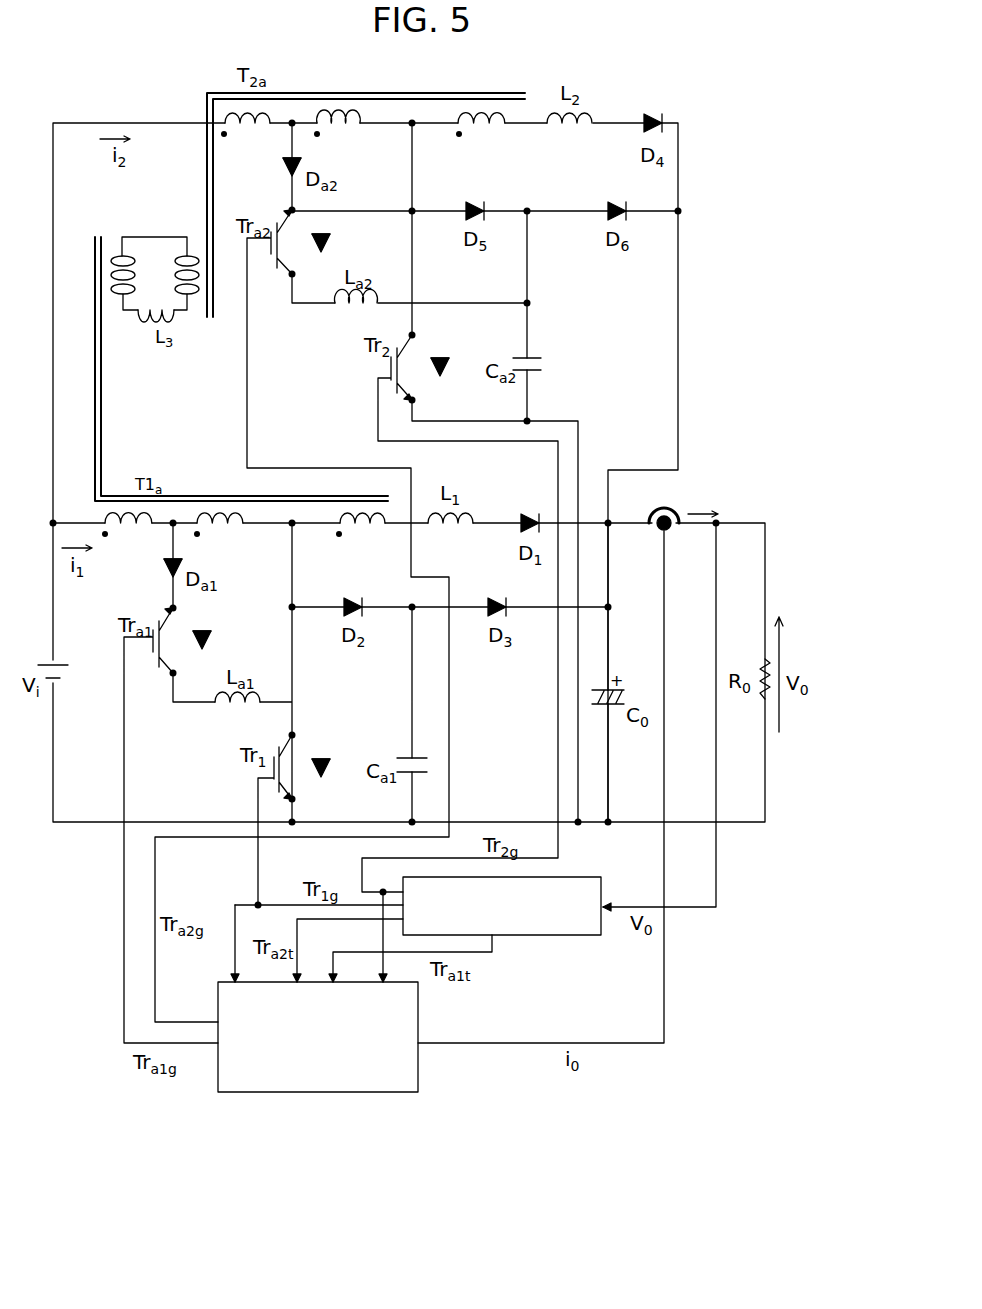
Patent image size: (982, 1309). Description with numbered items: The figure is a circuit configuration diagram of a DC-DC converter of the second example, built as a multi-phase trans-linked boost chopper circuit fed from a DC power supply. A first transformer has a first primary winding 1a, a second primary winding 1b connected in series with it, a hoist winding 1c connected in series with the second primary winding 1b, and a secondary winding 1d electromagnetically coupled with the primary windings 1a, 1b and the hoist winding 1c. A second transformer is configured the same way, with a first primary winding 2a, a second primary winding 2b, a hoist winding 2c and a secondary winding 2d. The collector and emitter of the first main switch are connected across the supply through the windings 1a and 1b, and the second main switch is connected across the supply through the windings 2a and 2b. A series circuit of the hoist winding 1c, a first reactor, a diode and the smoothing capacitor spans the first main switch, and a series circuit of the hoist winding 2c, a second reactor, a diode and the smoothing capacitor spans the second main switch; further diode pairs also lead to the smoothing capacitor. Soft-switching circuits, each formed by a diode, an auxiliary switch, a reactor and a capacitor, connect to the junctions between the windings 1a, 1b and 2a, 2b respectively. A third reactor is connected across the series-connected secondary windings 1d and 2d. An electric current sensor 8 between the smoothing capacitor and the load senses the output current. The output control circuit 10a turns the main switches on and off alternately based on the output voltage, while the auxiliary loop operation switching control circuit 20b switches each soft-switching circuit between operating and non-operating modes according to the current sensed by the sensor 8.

The first primary winding 1a is at (118, 540).
The second primary winding 1b is at (232, 540).
The hoist winding 1c is at (355, 540).
The secondary winding 1d is at (121, 298).
The first primary winding 2a is at (239, 142).
The second primary winding 2b is at (352, 142).
The hoist winding 2c is at (494, 142).
The secondary winding 2d is at (189, 298).
The electric current sensor 8 is at (669, 510).
The output control circuit 10a is at (547, 937).
The auxiliary loop operation switching control circuit 20b is at (330, 1094).